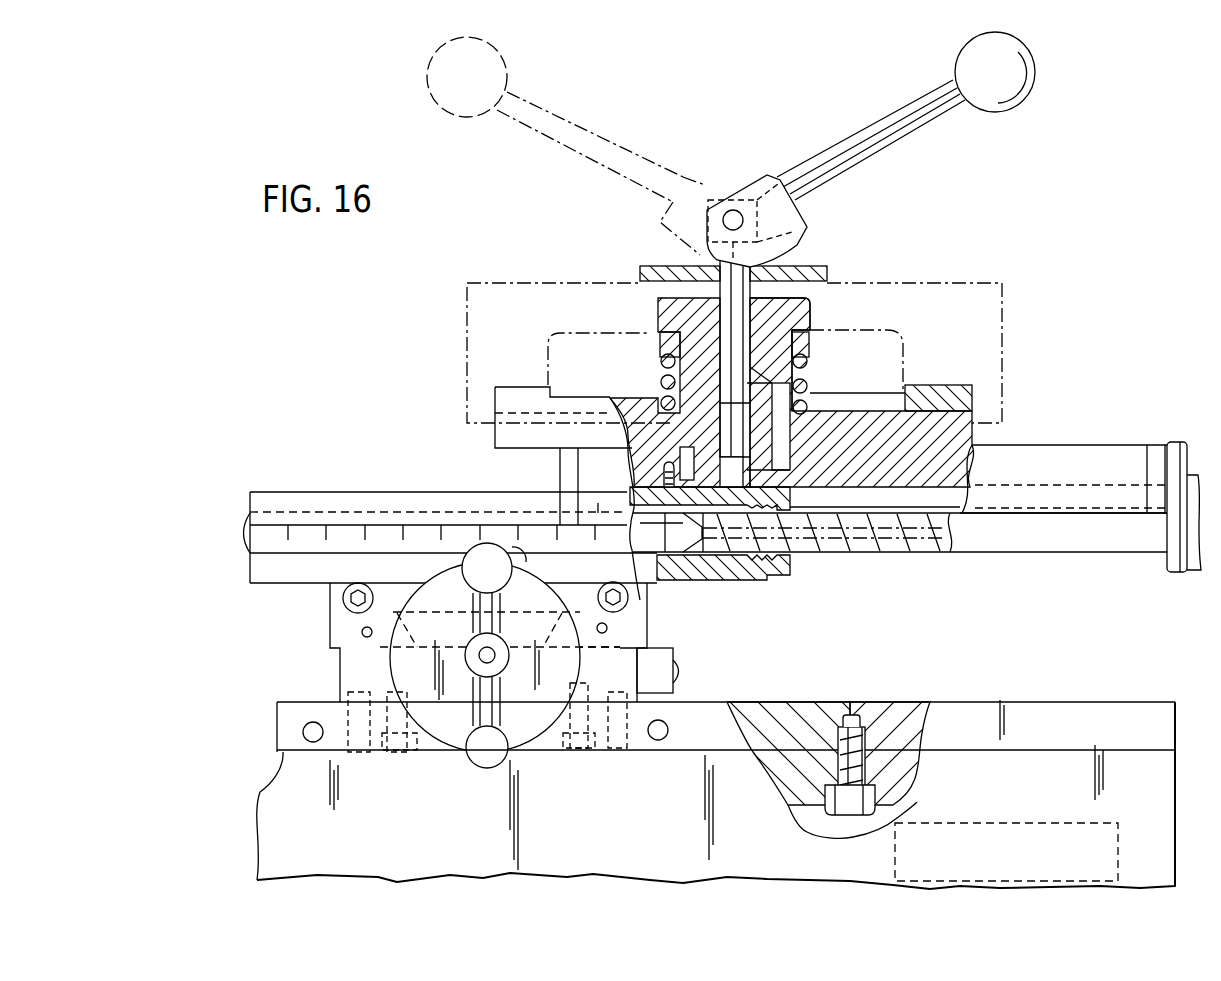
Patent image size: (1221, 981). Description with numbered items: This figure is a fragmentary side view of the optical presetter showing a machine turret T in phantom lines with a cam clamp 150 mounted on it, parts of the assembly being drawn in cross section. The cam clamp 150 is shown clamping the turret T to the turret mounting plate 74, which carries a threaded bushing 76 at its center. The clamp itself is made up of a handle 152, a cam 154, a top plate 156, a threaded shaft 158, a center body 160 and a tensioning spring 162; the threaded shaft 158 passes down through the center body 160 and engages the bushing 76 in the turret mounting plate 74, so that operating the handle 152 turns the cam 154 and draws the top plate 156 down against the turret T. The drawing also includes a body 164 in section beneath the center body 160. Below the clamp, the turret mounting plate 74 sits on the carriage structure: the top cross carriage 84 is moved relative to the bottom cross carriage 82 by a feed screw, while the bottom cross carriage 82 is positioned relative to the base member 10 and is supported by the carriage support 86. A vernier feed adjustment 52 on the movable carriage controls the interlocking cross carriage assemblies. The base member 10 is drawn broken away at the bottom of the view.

The base member 10 is at (1175, 757).
The vernier feed adjustment 52 is at (455, 738).
The turret mounting plate 74 is at (496, 440).
The threaded bushing 76 is at (762, 450).
The bottom cross carriage 82 is at (643, 630).
The top cross carriage 84 is at (1112, 448).
The carriage support 86 is at (675, 645).
The cam clamp 150 is at (628, 253).
The handle 152 is at (903, 118).
The cam 154 is at (807, 217).
The top plate 156 is at (822, 268).
The threaded shaft 158 is at (716, 350).
The center body 160 is at (810, 305).
The tensioning spring 162 is at (807, 365).
The clamp body 164 is at (815, 470).
The turret T is at (1002, 315).